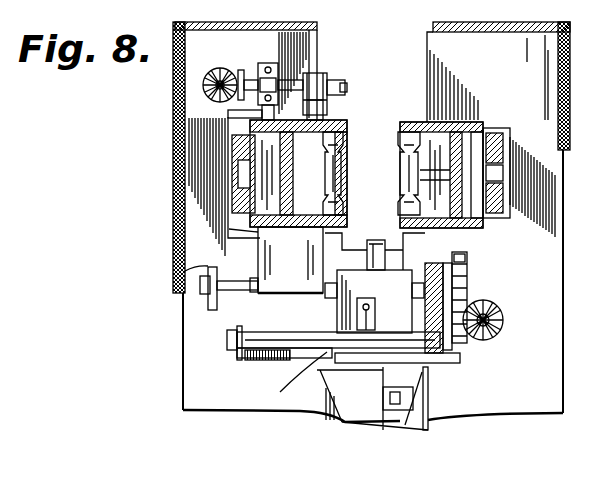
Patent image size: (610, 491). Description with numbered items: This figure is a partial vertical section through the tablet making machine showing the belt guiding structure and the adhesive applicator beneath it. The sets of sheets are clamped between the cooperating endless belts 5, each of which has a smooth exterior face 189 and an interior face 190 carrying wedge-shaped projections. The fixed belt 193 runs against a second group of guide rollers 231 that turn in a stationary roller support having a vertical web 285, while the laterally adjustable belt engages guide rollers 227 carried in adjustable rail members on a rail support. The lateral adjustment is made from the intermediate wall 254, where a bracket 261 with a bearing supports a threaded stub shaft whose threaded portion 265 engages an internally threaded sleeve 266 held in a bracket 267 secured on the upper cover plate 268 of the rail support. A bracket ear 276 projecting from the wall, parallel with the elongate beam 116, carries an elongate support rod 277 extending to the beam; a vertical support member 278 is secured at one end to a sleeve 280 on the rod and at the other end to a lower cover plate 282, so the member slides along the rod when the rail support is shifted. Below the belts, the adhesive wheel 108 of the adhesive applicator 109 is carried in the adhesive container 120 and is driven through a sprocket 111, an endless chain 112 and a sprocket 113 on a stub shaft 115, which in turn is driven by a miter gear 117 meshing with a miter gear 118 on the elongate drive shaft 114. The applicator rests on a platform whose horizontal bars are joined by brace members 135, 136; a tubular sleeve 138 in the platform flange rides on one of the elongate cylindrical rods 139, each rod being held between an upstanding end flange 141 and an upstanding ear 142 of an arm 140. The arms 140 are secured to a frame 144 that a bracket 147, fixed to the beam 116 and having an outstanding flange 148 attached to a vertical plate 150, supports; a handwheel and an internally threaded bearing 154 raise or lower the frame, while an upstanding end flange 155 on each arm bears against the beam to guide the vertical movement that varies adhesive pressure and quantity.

The endless belts 5 is at (398, 190).
The adhesive wheel 108 is at (380, 301).
The adhesive applicator 109 is at (395, 251).
The sprocket 111 is at (467, 262).
The endless chain 112 is at (468, 278).
The sprocket 113 is at (498, 335).
The elongate drive shaft 114 is at (504, 320).
The stub shaft 115 is at (452, 355).
The elongate beam 116 is at (428, 268).
The miter gear 117 is at (464, 302).
The miter gear 118 is at (495, 304).
The adhesive container 120 is at (337, 308).
The brace member 135 is at (340, 330).
The brace member 136 is at (382, 314).
The tubular sleeve 138 is at (250, 398).
The elongate cylindrical rods 139 is at (275, 366).
The arms 140 is at (238, 363).
The upstanding end flange 141 is at (228, 332).
The upstanding ear 142 is at (380, 398).
The frame 144 is at (325, 393).
The bracket 147 is at (429, 405).
The outstanding flange 148 is at (388, 372).
The vertical plate 150 is at (429, 385).
The internally threaded bearing 154 is at (340, 424).
The upstanding end flange 155 is at (458, 361).
The exterior face 189 is at (349, 151).
The interior face 190 is at (240, 184).
The belt 193 is at (399, 121).
The guide rollers 227 is at (347, 125).
The guide rollers 231 is at (397, 198).
The intermediate wall 254 is at (537, 30).
The bracket 261 is at (268, 64).
The threaded portion 265 is at (328, 82).
The internally threaded sleeve 266 is at (335, 95).
The bracket 267 is at (313, 70).
The upper cover plate 268 is at (232, 113).
The bracket ear 276 is at (181, 270).
The elongate support rod 277 is at (228, 290).
The vertical support member 278 is at (258, 254).
The sleeve 280 is at (252, 294).
The lower cover plate 282 is at (229, 229).
The vertical web 285 is at (479, 122).